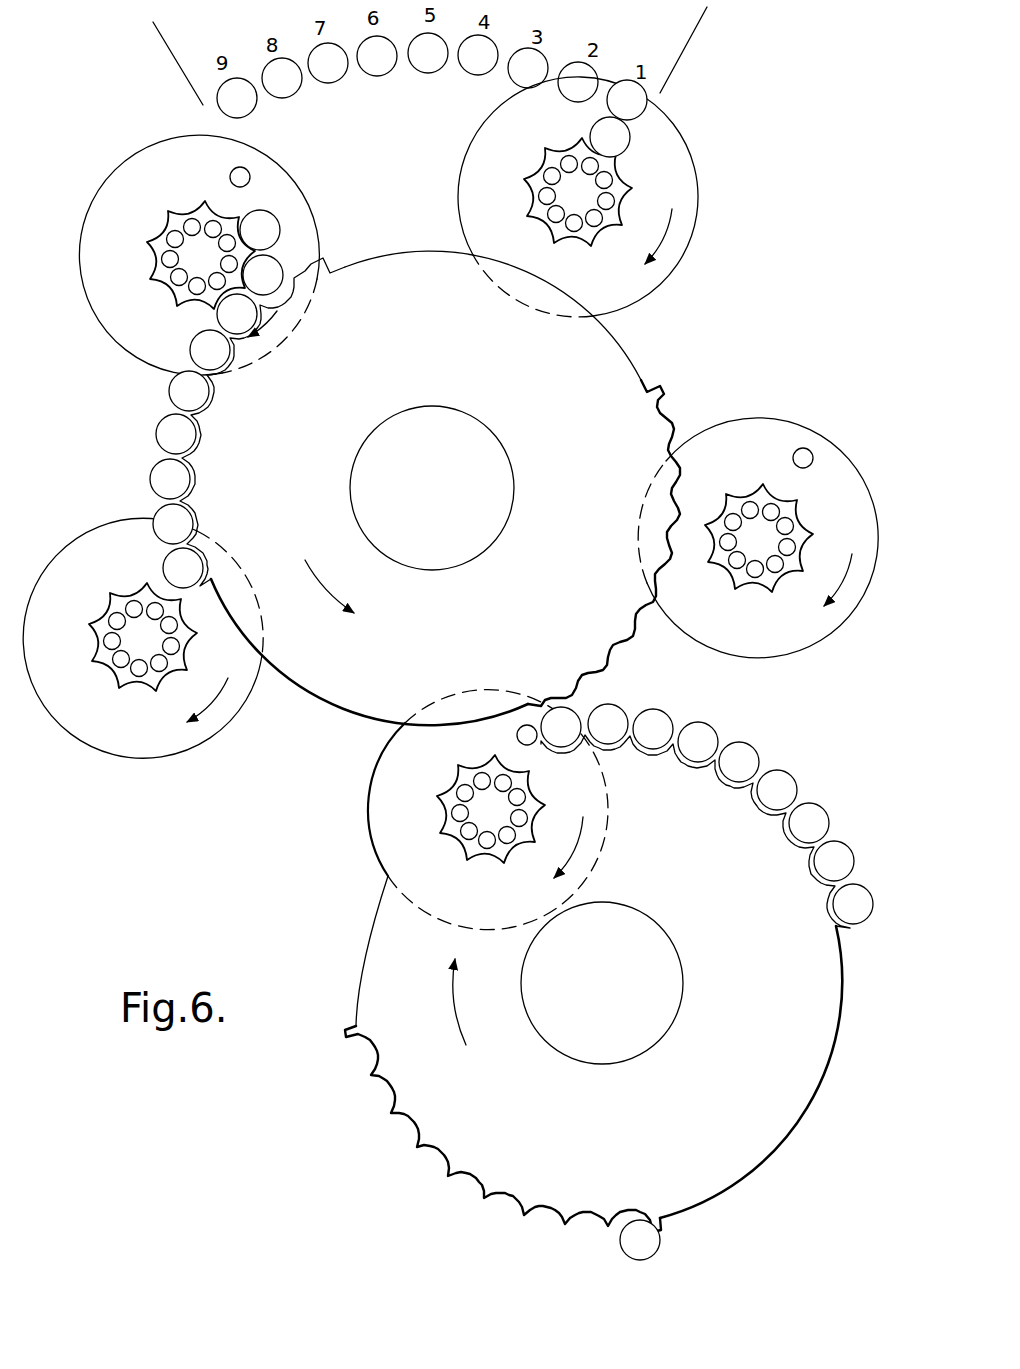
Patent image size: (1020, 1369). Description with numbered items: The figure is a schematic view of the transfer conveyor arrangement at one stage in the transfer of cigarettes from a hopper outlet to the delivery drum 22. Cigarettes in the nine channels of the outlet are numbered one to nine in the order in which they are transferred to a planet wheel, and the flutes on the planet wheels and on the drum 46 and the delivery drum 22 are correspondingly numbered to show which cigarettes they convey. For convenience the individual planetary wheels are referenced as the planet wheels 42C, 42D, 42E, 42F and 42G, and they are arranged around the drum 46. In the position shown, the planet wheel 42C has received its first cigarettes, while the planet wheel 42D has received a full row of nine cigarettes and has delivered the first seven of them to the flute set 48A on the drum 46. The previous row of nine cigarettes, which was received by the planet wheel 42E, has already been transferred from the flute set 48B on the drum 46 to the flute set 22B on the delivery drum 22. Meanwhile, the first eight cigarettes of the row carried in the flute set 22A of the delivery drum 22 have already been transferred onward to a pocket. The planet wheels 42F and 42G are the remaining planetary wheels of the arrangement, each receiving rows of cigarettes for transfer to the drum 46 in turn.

The delivery drum 22 is at (810, 1104).
The flute set 22A is at (500, 1105).
The flute set 22B is at (716, 895).
The planet wheel 42C is at (635, 197).
The planet wheel 42D is at (167, 300).
The planet wheel 42E is at (157, 693).
The planet wheel 42F is at (442, 812).
The planet wheel 42G is at (767, 587).
The drum 46 is at (345, 707).
The flute set 48A is at (270, 472).
The flute set 48B is at (618, 603).